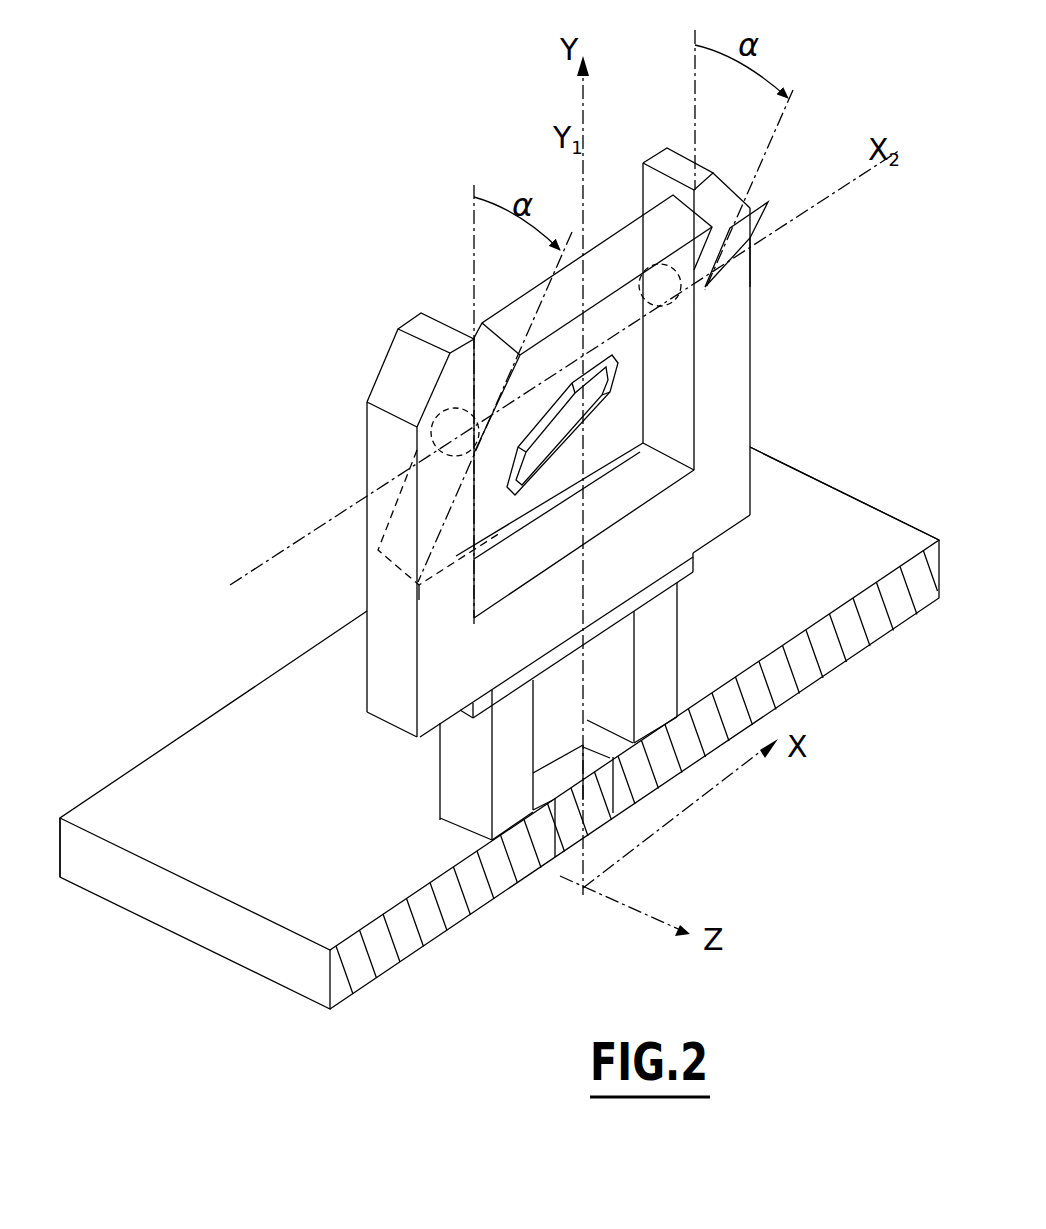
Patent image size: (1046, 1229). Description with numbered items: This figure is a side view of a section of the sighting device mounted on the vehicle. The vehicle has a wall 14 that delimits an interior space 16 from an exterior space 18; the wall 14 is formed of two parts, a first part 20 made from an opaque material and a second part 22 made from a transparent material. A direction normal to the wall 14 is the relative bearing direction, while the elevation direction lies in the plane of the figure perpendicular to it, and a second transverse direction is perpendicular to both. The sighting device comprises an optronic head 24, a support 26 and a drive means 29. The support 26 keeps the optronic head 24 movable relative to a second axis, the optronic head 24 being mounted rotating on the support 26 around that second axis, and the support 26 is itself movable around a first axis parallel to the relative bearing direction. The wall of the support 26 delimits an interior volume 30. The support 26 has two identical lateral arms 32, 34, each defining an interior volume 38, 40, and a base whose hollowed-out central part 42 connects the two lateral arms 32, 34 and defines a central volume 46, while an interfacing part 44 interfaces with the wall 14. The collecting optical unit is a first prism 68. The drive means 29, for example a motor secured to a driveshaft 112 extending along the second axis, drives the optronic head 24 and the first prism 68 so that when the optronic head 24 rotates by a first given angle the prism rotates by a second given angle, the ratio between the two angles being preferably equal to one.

The wall 14 is at (738, 636).
The interior space 16 is at (418, 1058).
The exterior space 18 is at (193, 818).
The first part 20 is at (427, 912).
The second part 22 is at (595, 822).
The optronic head 24 is at (490, 378).
The support 26 is at (338, 437).
The drive means 29 is at (447, 298).
The interior volume 30 is at (718, 508).
The lateral arm 32 is at (430, 522).
The lateral arm 34 is at (728, 402).
The interior volume 38 is at (445, 600).
The interior volume 40 is at (728, 345).
The central part 42 is at (438, 680).
The interfacing part 44 is at (460, 770).
The central volume 46 is at (612, 566).
The first prism 68 is at (730, 268).
The driveshaft 112 is at (621, 198).